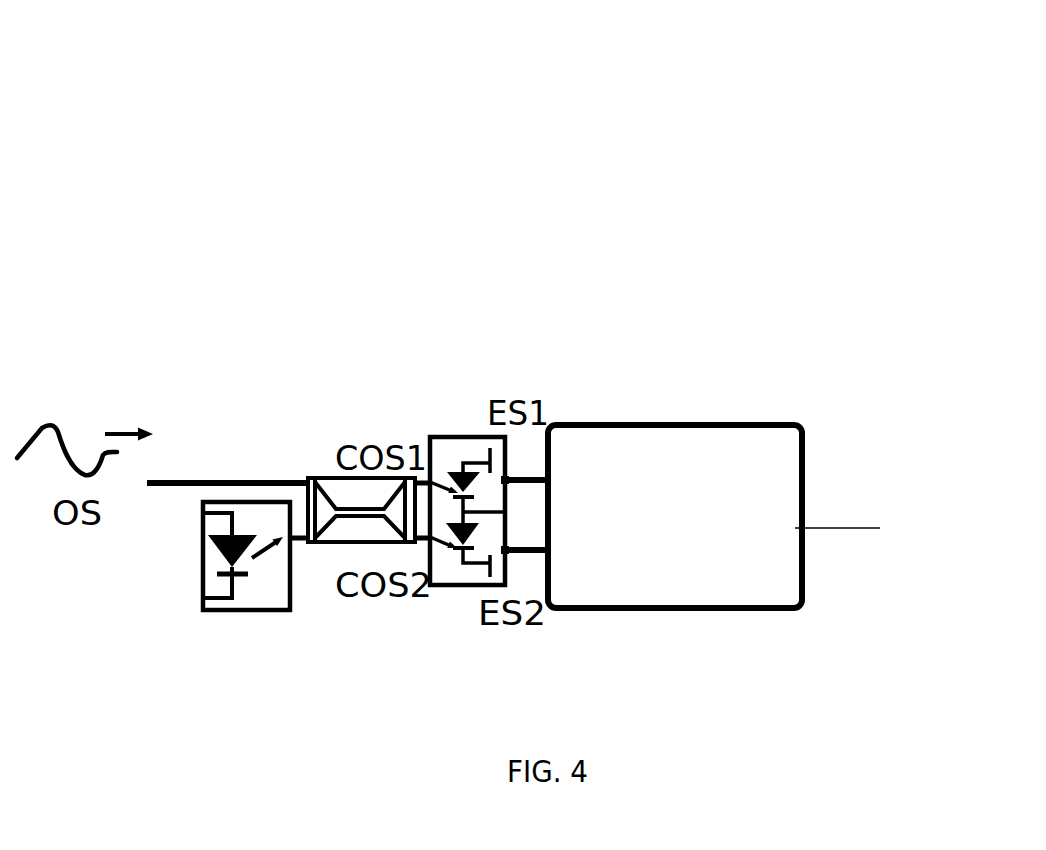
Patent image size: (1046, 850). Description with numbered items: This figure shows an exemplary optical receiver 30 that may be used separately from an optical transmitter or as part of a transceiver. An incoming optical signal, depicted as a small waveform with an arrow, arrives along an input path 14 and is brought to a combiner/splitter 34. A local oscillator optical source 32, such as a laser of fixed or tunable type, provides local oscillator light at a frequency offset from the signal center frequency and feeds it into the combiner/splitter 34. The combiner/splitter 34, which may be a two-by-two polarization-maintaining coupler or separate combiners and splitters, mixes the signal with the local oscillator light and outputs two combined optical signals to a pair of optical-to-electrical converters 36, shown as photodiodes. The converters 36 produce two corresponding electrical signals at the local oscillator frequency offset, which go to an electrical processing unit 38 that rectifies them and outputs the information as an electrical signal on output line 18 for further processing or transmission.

The optical receiver 30 is at (224, 159).
The optical waveguide 14 is at (177, 481).
The local oscillator optical source 32 is at (197, 545).
The combiner/splitter 34 is at (308, 478).
The optical-to-electrical converter 36 is at (458, 427).
The electrical processing unit 38 is at (683, 430).
The output line 18 is at (813, 532).